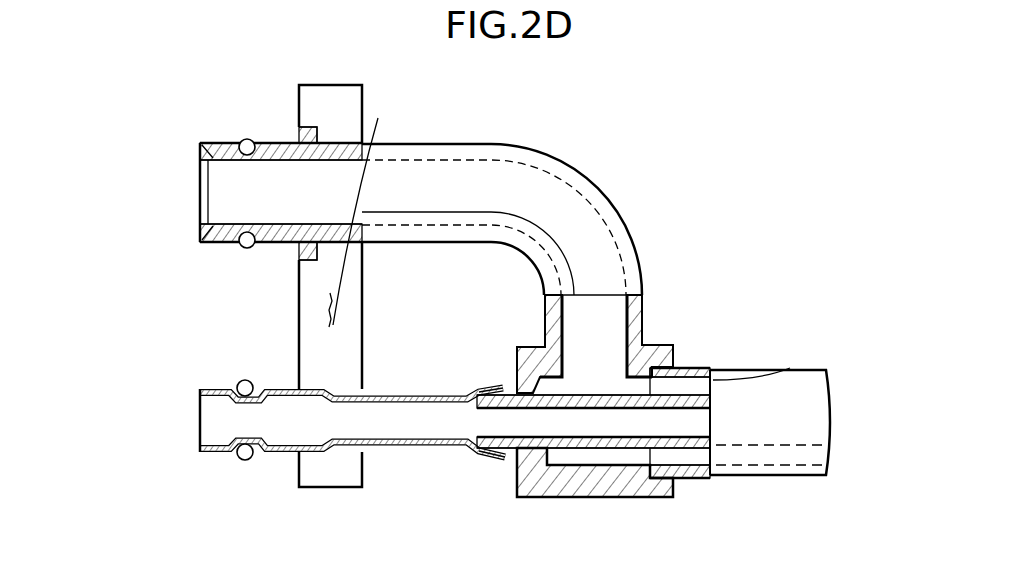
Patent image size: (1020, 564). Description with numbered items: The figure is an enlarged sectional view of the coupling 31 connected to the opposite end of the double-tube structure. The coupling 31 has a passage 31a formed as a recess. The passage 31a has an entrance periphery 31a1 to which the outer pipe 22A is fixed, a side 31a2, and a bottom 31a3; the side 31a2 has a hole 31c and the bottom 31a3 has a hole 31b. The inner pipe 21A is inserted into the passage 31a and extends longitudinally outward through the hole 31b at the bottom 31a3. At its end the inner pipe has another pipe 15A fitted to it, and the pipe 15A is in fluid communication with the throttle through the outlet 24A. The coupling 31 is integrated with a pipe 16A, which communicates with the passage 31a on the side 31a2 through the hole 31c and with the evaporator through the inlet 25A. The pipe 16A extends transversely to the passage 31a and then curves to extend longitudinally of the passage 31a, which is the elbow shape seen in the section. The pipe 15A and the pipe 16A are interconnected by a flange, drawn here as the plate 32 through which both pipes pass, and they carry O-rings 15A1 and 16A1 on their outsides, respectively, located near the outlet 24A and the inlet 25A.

The bracket 32 is at (362, 91).
The pipe 16A is at (487, 143).
The O-ring 16A1 is at (243, 138).
The inlet 25A is at (207, 177).
The pipe 15A is at (455, 461).
The O-ring 15A1 is at (240, 383).
The outlet 24A is at (237, 452).
The coupling 31 is at (612, 398).
The passage 31a is at (594, 500).
The entrance periphery 31a1 is at (678, 367).
The side 31a2 is at (596, 465).
The bottom 31a3 is at (545, 470).
The hole 31b is at (503, 456).
The hole 31c is at (560, 365).
The outer pipe 22A is at (693, 383).
The inner pipe 21A is at (790, 368).